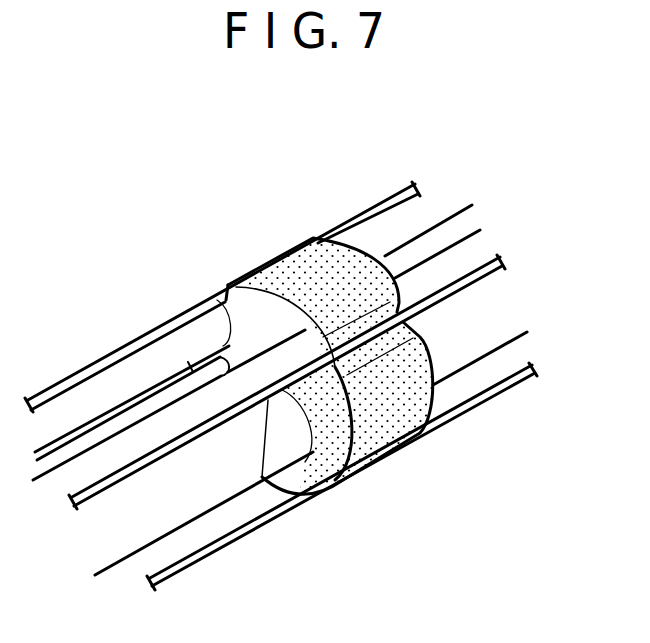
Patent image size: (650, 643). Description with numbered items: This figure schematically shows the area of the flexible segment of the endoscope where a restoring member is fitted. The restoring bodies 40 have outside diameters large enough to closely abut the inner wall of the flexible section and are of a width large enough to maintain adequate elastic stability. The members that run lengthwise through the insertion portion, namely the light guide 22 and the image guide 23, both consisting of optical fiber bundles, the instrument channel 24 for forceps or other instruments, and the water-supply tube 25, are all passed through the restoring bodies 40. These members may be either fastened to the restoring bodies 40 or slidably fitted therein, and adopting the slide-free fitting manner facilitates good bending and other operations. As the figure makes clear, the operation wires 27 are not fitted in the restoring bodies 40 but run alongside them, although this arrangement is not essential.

The light guide 22 is at (273, 370).
The image guide 23 is at (203, 318).
The instrument channel 24 is at (220, 490).
The water-supply tube 25 is at (190, 377).
The operation wires 27 is at (378, 203).
The restoring bodies 40 is at (277, 258).